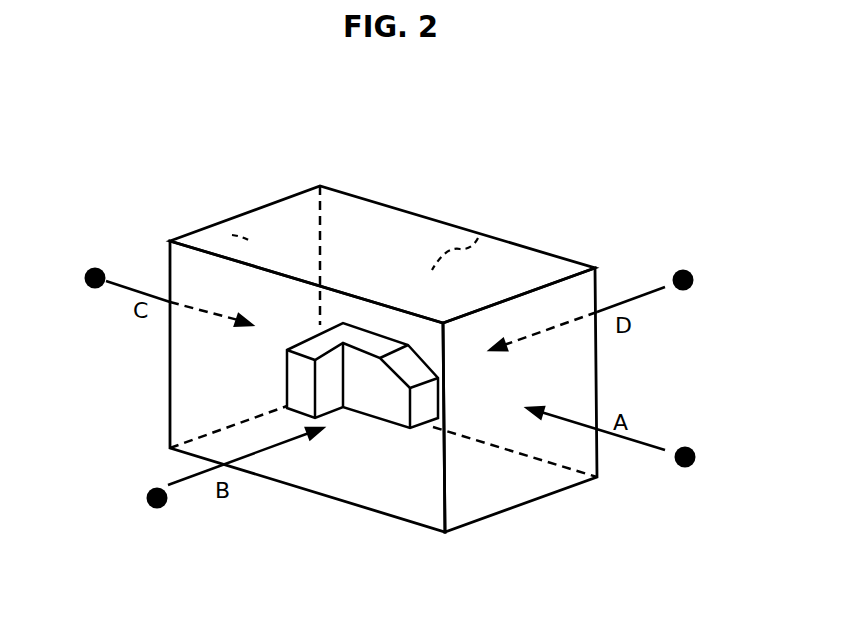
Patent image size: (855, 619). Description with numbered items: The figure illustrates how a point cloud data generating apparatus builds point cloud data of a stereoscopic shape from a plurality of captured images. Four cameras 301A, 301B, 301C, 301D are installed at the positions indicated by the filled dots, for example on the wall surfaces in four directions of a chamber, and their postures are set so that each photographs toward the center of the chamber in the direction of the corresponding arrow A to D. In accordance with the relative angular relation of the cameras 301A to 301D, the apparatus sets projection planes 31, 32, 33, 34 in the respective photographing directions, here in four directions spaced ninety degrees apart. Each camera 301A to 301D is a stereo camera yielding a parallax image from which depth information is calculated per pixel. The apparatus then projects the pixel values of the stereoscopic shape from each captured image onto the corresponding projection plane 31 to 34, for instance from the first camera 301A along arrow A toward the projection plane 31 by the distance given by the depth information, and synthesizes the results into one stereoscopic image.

The projection plane 31 is at (487, 475).
The projection plane 32 is at (350, 477).
The projection plane 33 is at (232, 235).
The projection plane 34 is at (478, 238).
The first camera 301A is at (697, 455).
The second camera 301B is at (146, 498).
The third camera 301C is at (85, 270).
The fourth camera 301D is at (690, 273).